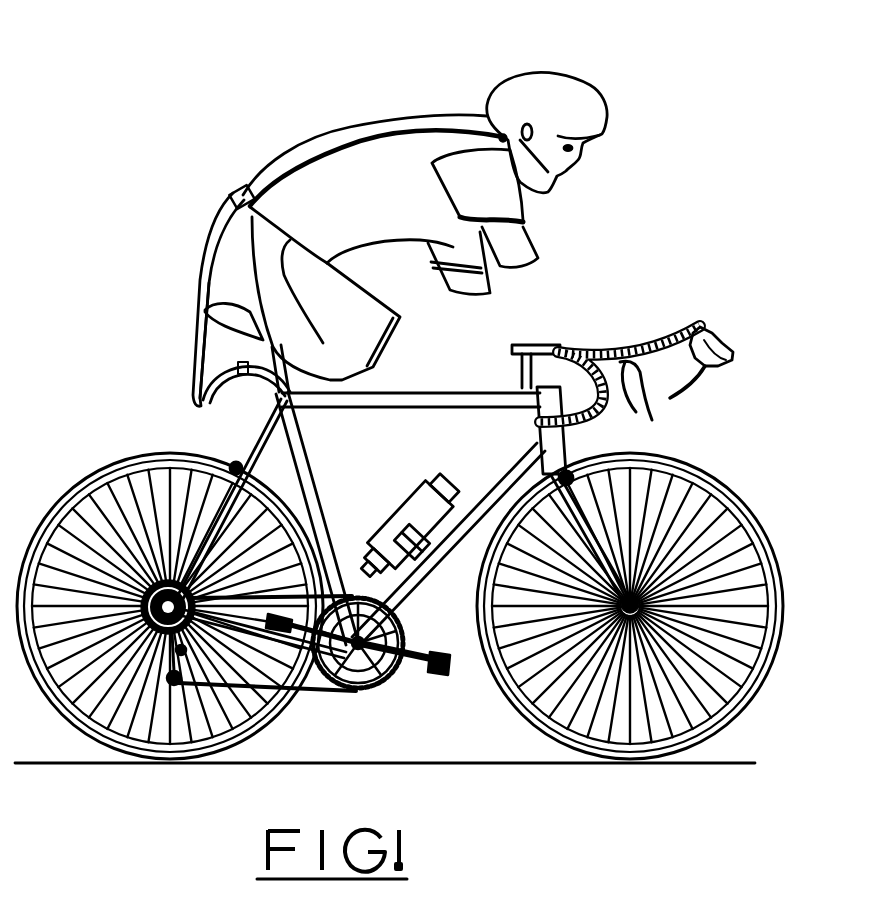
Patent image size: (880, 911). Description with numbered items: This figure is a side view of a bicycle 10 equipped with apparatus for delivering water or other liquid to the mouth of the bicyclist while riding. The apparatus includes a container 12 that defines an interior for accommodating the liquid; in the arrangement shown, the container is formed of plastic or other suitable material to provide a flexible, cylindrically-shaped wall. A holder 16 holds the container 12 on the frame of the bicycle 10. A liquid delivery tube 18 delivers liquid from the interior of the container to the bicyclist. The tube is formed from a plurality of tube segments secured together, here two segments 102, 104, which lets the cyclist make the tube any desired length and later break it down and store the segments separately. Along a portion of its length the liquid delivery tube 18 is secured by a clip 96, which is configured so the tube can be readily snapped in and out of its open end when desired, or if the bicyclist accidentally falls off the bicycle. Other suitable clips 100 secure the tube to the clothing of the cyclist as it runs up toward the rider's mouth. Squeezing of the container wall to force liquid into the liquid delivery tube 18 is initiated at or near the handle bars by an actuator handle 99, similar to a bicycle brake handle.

The bicycle 10 is at (723, 481).
The container 12 is at (410, 522).
The holder 16 is at (428, 568).
The liquid delivery tube 18 is at (193, 387).
The clip 96 is at (248, 376).
The handle 99 is at (738, 356).
The clips 100 is at (236, 190).
The liquid delivery tube segment 102 is at (193, 340).
The liquid delivery tube segment 104 is at (320, 457).